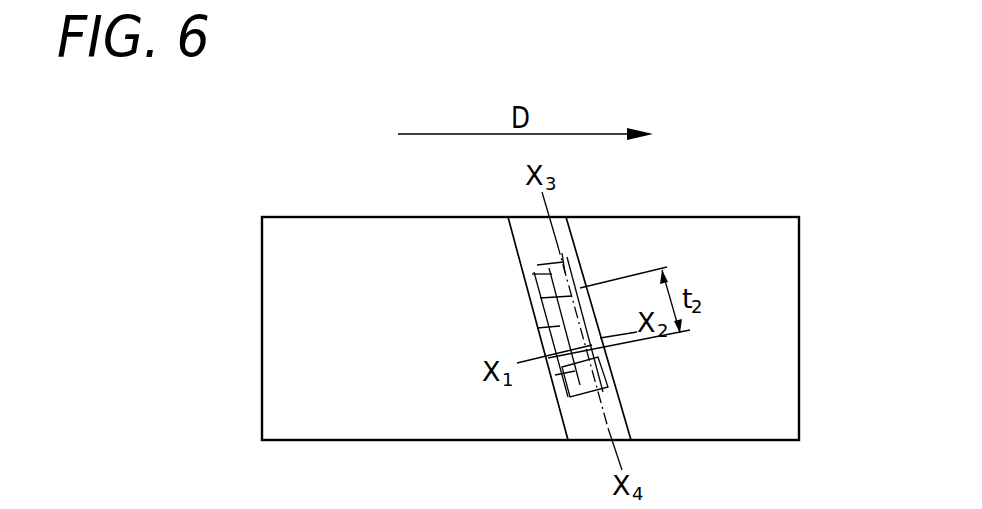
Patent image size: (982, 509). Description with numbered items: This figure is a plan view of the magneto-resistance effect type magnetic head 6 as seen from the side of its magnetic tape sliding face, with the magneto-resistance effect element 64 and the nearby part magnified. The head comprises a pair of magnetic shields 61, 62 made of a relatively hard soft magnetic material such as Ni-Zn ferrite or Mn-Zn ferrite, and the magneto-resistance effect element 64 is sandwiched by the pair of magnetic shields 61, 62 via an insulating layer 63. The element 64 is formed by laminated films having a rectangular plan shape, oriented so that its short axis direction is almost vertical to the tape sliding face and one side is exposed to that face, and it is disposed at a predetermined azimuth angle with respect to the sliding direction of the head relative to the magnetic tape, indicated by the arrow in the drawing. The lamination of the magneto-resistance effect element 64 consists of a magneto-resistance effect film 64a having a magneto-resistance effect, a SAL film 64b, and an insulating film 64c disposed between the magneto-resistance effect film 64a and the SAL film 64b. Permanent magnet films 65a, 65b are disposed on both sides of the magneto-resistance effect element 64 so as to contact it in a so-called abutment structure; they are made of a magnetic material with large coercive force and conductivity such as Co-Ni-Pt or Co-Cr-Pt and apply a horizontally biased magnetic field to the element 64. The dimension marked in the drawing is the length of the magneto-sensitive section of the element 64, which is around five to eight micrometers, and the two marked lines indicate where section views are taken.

The magneto-resistance effect type magnetic head 6 is at (722, 200).
The magnetic shield 61 is at (377, 228).
The magnetic shield 62 is at (773, 223).
The insulating layer 63 is at (522, 226).
The magneto-resistance effect element 64 is at (612, 296).
The magneto-resistance effect film 64a is at (557, 297).
The SAL film 64b is at (560, 373).
The insulating film 64c is at (552, 325).
The permanent magnet film 65a is at (533, 273).
The permanent magnet film 65b is at (612, 383).